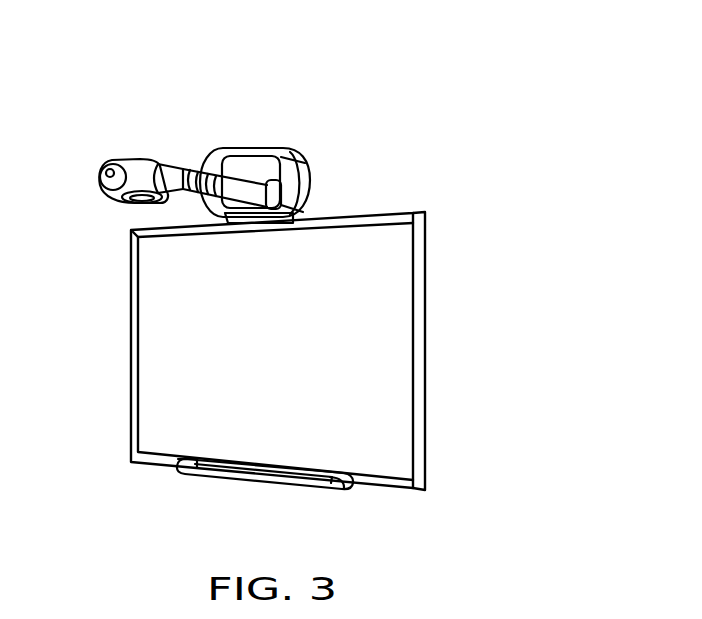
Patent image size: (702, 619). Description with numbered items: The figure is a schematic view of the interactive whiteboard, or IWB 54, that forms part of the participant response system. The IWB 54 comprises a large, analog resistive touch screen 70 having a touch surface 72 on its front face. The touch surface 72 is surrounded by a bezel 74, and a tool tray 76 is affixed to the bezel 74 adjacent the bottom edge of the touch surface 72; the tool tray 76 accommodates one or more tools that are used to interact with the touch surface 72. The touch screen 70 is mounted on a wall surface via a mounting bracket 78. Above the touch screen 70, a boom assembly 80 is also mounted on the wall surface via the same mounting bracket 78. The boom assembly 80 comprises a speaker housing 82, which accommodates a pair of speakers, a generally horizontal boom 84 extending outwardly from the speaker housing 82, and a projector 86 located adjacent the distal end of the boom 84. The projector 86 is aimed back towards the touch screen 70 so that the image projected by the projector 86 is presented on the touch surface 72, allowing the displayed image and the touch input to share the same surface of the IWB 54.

The IWB 54 is at (515, 135).
The touch screen 70 is at (447, 311).
The touch surface 72 is at (358, 380).
The bezel 74 is at (352, 217).
The tool tray 76 is at (339, 480).
The mounting bracket 78 is at (293, 221).
The boom assembly 80 is at (143, 135).
The speaker housing 82 is at (302, 165).
The boom 84 is at (211, 152).
The projector 86 is at (123, 200).